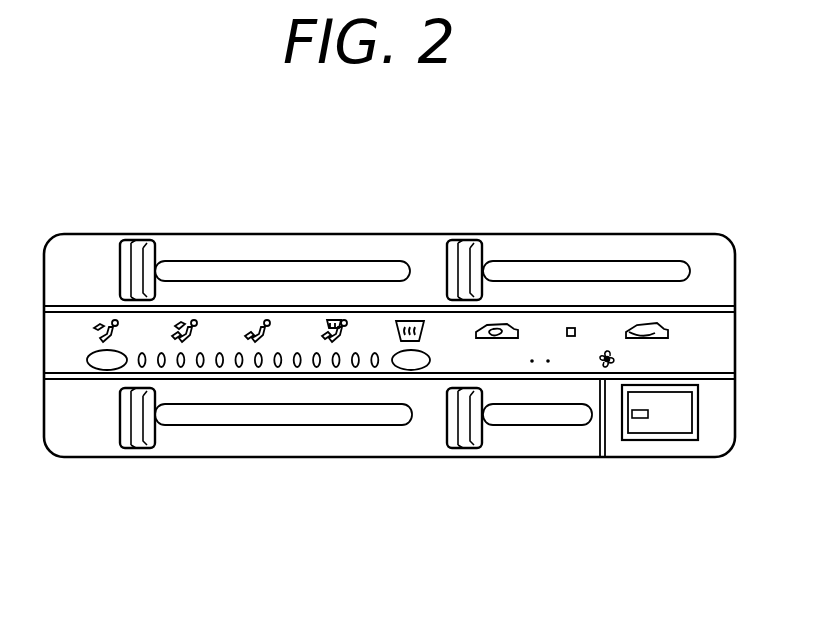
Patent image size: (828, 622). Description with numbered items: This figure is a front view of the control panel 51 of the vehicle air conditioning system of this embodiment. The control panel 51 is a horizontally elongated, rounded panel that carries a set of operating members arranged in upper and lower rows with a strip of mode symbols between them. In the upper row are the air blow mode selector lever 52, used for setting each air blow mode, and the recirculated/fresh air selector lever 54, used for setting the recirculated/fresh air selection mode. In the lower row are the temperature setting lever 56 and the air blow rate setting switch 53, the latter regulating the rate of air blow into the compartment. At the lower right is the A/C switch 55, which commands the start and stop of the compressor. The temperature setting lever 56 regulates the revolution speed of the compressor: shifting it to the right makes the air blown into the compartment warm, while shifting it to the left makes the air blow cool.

The control panel 51 is at (342, 218).
The air blow mode selector lever 52 is at (143, 240).
The air blow rate setting switch 53 is at (468, 448).
The recirculated/fresh air selector lever 54 is at (470, 240).
The A/C switch 55 is at (668, 441).
The temperature setting lever 56 is at (145, 448).